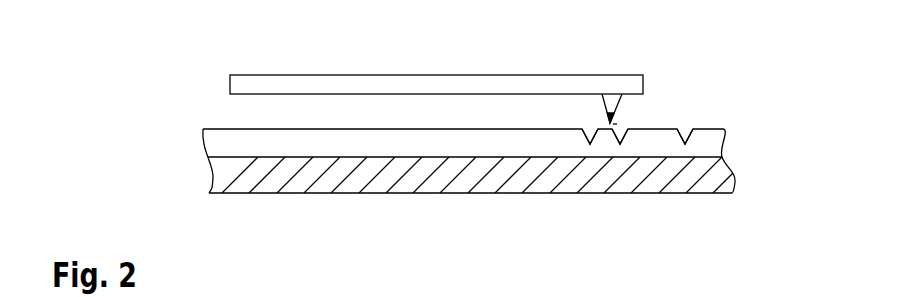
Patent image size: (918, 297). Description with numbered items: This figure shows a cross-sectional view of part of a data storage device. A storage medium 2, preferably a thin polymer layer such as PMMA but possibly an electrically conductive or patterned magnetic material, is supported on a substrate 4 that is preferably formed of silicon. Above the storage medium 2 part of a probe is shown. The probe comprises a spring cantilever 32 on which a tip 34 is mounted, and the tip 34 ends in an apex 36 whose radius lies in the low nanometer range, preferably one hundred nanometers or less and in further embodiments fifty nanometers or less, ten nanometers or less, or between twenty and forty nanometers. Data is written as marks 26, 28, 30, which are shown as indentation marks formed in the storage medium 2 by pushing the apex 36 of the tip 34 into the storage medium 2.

The storage medium 2 is at (213, 141).
The substrate 4 is at (264, 187).
The mark 26 is at (584, 134).
The mark 28 is at (626, 134).
The mark 30 is at (693, 134).
The spring cantilever 32 is at (385, 74).
The tip 34 is at (614, 108).
The apex 36 is at (615, 122).